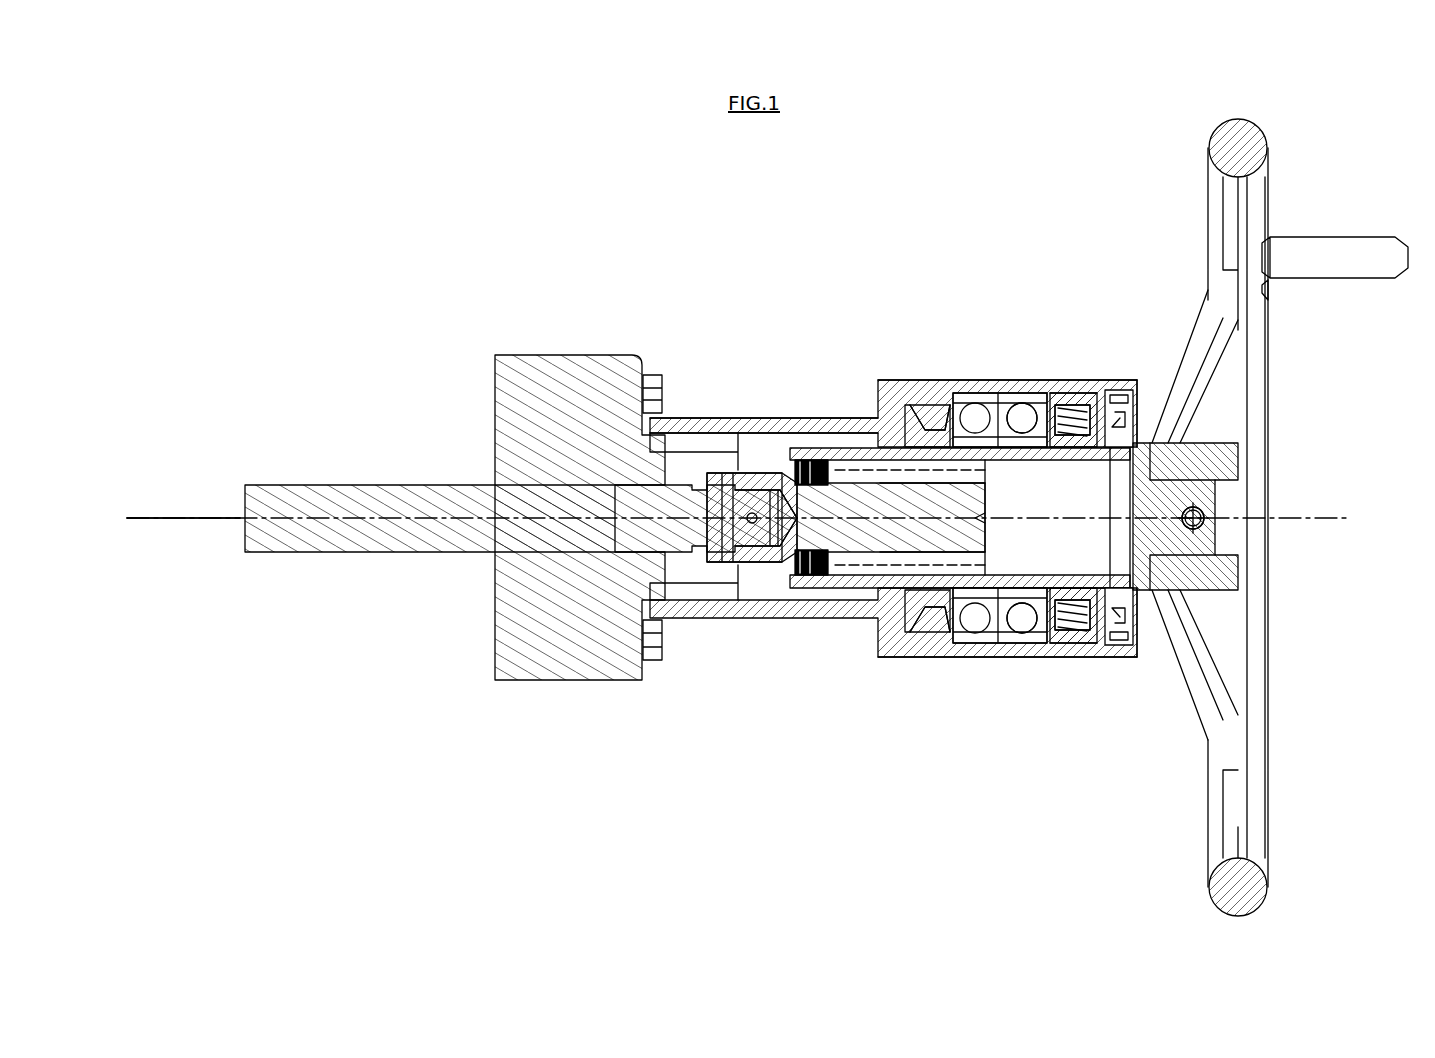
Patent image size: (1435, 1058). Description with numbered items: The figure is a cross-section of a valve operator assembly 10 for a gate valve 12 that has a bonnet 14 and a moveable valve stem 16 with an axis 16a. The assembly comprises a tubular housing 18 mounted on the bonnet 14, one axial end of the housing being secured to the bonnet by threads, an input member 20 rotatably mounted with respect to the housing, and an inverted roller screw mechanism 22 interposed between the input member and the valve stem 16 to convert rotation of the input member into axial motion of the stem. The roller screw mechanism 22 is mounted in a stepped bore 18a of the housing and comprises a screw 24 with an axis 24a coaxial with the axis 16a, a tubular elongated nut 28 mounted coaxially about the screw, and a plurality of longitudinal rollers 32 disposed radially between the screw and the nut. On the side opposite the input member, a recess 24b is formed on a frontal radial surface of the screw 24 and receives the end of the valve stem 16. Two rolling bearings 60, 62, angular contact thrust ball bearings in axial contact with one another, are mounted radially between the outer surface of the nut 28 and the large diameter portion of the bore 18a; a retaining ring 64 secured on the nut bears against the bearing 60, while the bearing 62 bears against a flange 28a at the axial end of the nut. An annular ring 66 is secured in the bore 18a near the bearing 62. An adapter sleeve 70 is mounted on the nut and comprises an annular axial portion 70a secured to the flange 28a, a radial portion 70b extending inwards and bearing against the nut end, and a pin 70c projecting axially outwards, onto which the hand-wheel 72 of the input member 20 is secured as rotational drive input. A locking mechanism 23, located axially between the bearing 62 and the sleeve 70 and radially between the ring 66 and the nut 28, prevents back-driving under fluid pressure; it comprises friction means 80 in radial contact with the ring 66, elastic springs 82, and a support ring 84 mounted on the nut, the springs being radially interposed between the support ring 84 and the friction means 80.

The valve operator assembly 10 is at (865, 352).
The gate valve 12 is at (596, 326).
The bonnet 14 is at (549, 355).
The valve stem 16 is at (313, 487).
The axis 16a is at (164, 510).
The tubular housing 18 is at (903, 373).
The bore 18a is at (775, 447).
The input member 20 is at (1328, 180).
The inverted roller screw mechanism 22 is at (860, 620).
The locking mechanism 23 is at (1094, 638).
The screw 24 is at (920, 570).
The axis 24a is at (164, 510).
The recess 24b is at (764, 560).
The nut 28 is at (827, 590).
The flange 28a is at (1140, 400).
The longitudinal rollers 32 is at (893, 538).
The rolling bearing 60 is at (970, 388).
The rolling bearing 62 is at (1016, 388).
The retaining ring 64 is at (928, 428).
The annular ring 66 is at (1072, 400).
The adapter sleeve 70 is at (1148, 645).
The annular axial portion 70a is at (1120, 393).
The radial portion 70b is at (1148, 640).
The pin 70c is at (1206, 497).
The hand-wheel 72 is at (1270, 822).
The friction means 80 is at (1060, 625).
The elastic springs 82 is at (1055, 610).
The support ring 84 is at (1090, 643).